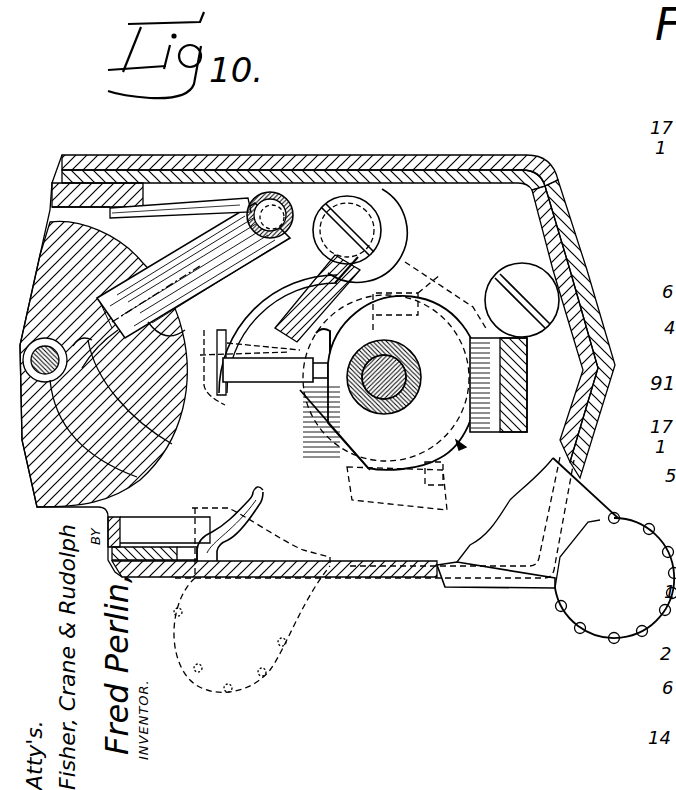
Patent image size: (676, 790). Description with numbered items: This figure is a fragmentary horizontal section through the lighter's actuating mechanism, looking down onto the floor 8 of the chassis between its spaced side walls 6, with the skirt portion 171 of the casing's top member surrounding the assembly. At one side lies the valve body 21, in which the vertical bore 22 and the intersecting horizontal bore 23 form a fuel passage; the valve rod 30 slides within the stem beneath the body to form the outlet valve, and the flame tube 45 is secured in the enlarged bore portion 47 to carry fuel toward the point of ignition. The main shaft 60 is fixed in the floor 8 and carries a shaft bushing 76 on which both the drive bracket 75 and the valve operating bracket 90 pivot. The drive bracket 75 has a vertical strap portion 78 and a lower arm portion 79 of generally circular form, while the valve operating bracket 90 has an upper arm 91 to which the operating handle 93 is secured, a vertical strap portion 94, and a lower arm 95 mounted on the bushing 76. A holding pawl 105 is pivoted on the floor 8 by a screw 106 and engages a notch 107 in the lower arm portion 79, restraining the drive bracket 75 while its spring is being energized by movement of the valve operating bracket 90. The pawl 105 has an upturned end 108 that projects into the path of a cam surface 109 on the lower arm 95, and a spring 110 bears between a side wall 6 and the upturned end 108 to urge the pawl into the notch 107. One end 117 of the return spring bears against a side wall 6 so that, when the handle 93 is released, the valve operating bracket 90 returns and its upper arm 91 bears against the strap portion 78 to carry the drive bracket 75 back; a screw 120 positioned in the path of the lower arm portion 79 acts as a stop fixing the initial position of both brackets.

The side walls 6 is at (112, 180).
The floor 8 is at (515, 228).
The valve body 21 is at (130, 456).
The vertical bore 22 is at (140, 427).
The horizontal bore 23 is at (157, 387).
The valve rod 30 is at (123, 474).
The flame tube 45 is at (176, 262).
The enlarged bore portion 47 is at (182, 334).
The shaft 60 is at (405, 385).
The drive bracket 75 is at (528, 406).
The shaft bushing 76 is at (378, 414).
The vertical strap portion 78 is at (506, 436).
The lower arm portion 79 is at (325, 428).
The valve operating bracket 90 is at (466, 452).
The upper arm 91 is at (515, 592).
The operating handle 93 is at (600, 620).
The vertical strap portion 94 is at (432, 297).
The lower arm 95 is at (440, 487).
The holding pawl 105 is at (290, 252).
The screw 106 is at (380, 222).
The notch 107 is at (392, 262).
The upturned end 108 is at (248, 380).
The cam surface 109 is at (345, 465).
The spring 110 is at (180, 207).
The end of return spring 117 is at (186, 512).
The screw 120 is at (540, 296).
The skirt portion 171 is at (560, 270).